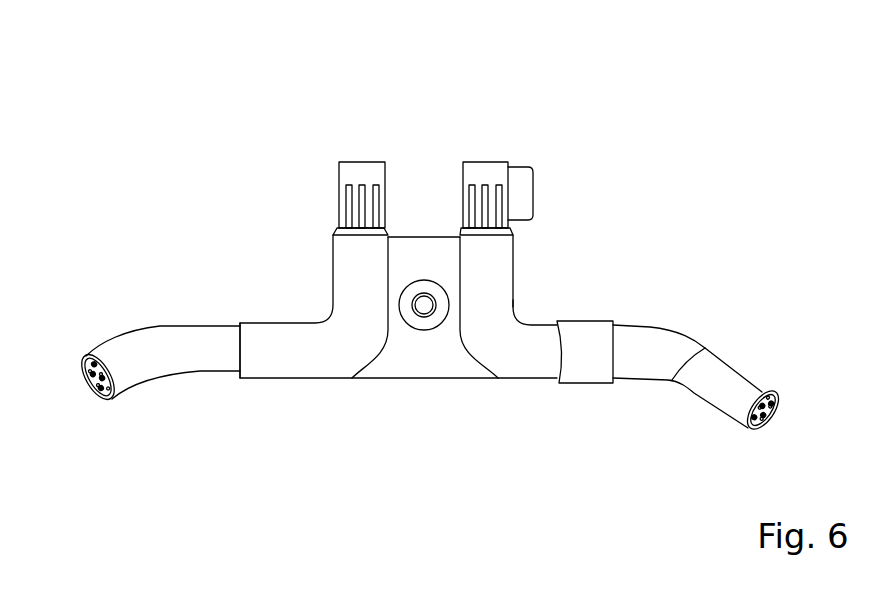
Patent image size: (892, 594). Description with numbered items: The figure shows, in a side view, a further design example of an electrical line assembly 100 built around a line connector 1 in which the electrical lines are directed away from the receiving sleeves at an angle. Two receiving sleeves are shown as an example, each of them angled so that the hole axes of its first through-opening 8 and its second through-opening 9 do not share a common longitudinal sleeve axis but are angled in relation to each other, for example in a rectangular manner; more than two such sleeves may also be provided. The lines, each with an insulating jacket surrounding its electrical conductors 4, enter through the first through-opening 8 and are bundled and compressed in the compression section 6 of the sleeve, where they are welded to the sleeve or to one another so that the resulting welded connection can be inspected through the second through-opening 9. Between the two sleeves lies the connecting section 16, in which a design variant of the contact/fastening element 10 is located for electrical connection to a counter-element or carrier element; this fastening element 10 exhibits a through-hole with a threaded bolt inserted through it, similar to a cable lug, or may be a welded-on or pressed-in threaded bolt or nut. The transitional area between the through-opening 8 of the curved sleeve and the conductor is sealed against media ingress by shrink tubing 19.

The electrical line assembly 100 is at (210, 179).
The line connector 1 is at (319, 282).
The electrical conductor 4 is at (83, 382).
The compression section 6 is at (533, 193).
The first through-opening 8 is at (243, 365).
The second through-opening 9 is at (350, 162).
The contact/fastening element 10 is at (424, 330).
The connecting section 16 is at (397, 363).
The shrink tubing 19 is at (587, 356).